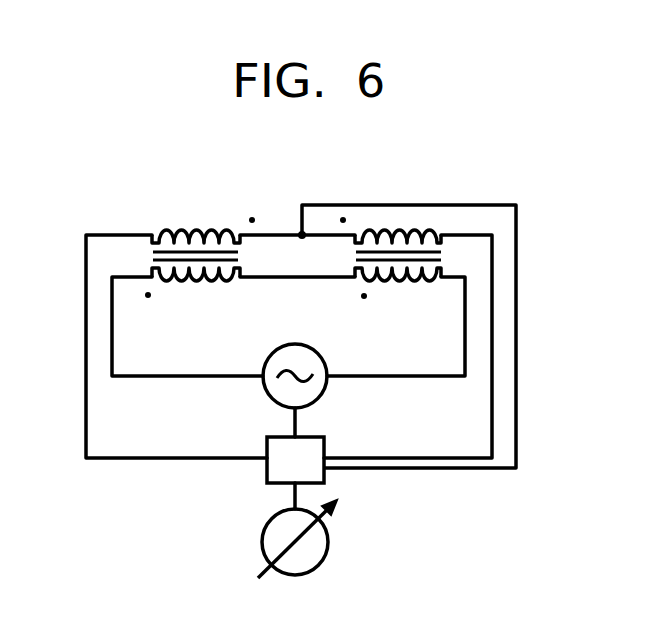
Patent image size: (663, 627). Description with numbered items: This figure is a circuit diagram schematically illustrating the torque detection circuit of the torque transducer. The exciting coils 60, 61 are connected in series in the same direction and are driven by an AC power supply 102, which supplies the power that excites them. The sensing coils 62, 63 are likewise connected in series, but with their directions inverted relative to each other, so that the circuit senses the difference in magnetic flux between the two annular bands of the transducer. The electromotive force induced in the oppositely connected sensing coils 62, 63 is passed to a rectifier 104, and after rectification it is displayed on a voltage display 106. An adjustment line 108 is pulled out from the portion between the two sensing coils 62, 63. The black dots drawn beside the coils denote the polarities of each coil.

The exciting coil 60 is at (211, 284).
The exciting coil 61 is at (405, 284).
The sensing coil 62 is at (201, 230).
The sensing coil 63 is at (430, 233).
The AC power supply 102 is at (326, 387).
The rectifier 104 is at (326, 479).
The voltage display 106 is at (329, 553).
The adjustment line 108 is at (405, 204).